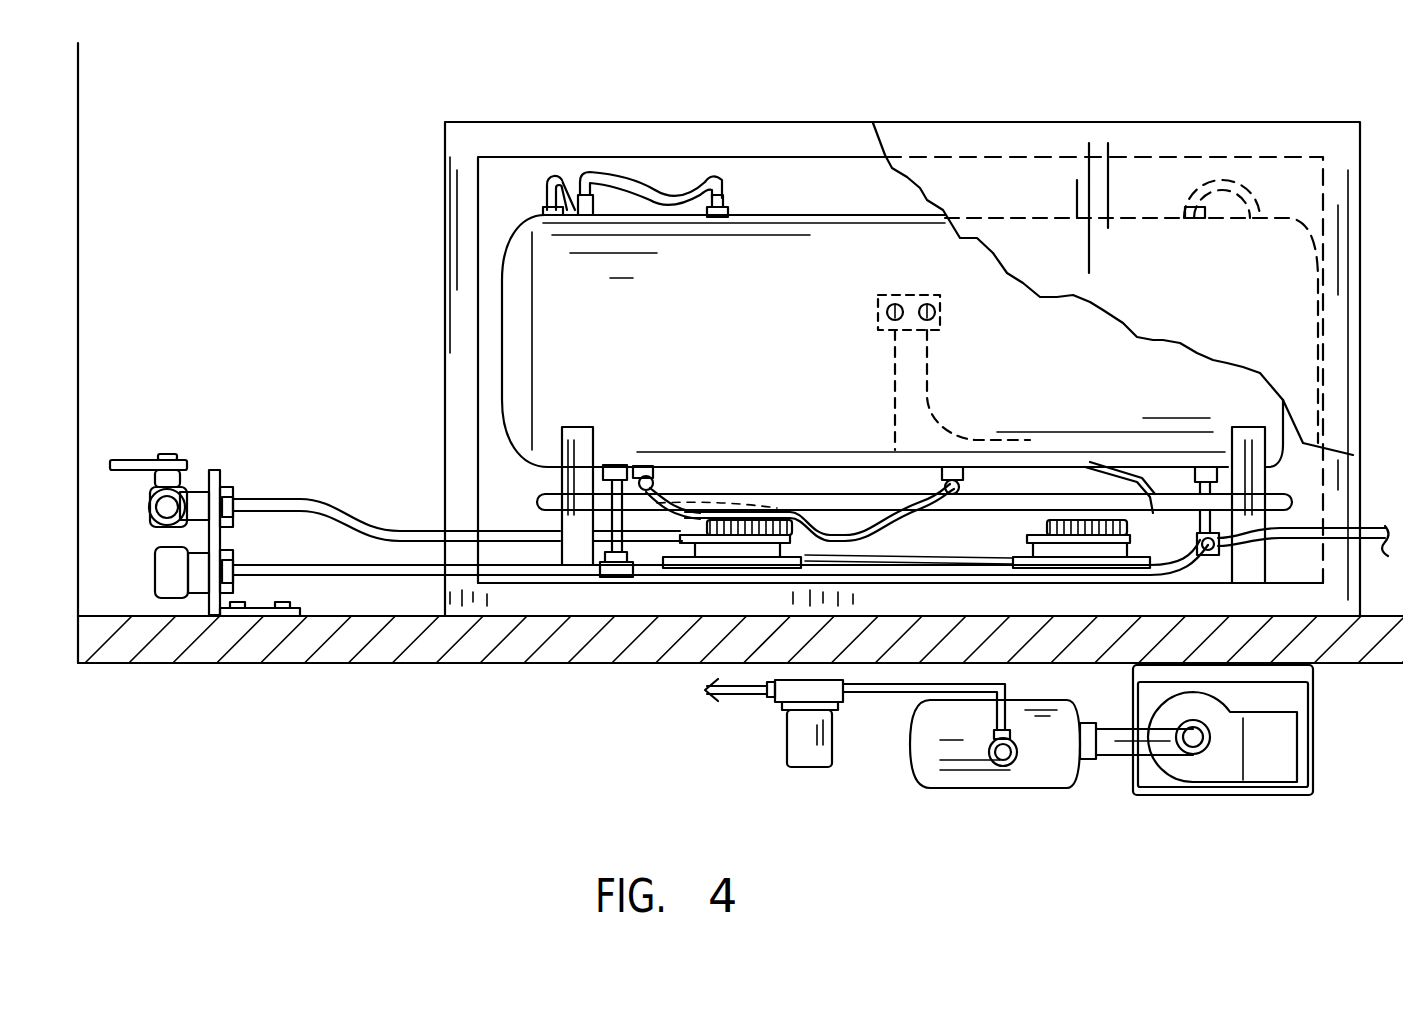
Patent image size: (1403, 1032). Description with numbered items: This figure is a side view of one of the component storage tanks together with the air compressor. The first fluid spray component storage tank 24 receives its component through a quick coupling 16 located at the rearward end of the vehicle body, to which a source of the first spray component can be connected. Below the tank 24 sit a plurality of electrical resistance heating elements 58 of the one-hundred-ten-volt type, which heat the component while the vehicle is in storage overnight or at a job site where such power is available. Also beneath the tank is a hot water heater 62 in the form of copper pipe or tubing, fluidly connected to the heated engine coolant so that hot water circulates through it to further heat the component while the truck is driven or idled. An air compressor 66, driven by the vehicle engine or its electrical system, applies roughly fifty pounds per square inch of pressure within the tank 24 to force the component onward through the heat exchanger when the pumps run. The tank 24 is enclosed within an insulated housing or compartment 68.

The quick coupling 16 is at (213, 470).
The first fluid spray component storage tank 24 is at (746, 327).
The electrical resistance heating elements 58 is at (727, 552).
The hot water heater 62 is at (830, 500).
The air compressor 66 is at (1008, 775).
The insulated housing or compartment 68 is at (1027, 207).